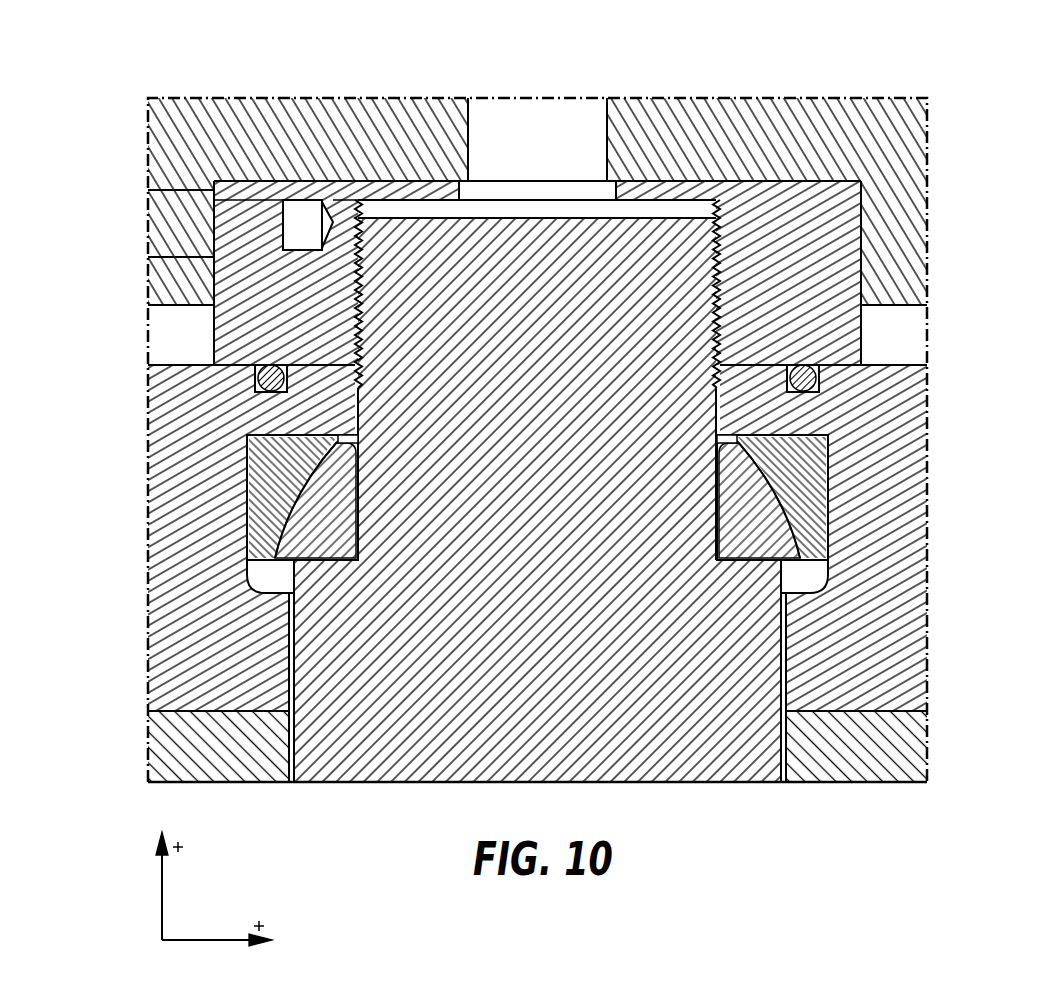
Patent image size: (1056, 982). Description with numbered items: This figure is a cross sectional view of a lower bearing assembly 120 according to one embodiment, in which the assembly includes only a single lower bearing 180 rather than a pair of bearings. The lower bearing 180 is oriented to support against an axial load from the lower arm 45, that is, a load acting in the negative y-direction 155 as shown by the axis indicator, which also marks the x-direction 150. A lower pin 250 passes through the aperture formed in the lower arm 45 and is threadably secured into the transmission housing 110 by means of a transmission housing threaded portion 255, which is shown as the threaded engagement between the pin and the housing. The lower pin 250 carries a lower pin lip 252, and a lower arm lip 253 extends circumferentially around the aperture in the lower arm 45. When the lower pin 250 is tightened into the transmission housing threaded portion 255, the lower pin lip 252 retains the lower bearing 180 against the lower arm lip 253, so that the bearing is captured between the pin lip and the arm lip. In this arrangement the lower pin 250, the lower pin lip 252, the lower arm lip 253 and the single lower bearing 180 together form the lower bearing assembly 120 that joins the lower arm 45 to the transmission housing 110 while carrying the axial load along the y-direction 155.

The lower arm 45 is at (170, 665).
The transmission housing 110 is at (297, 123).
The lower bearing assembly 120 is at (705, 835).
The x-direction 150 is at (214, 940).
The y-direction 155 is at (162, 879).
The lower bearing 180 is at (312, 527).
The lower pin 250 is at (440, 687).
The lower pin lip 252 is at (537, 476).
The lower arm lip 253 is at (330, 388).
The transmission housing threaded portion 255 is at (367, 273).